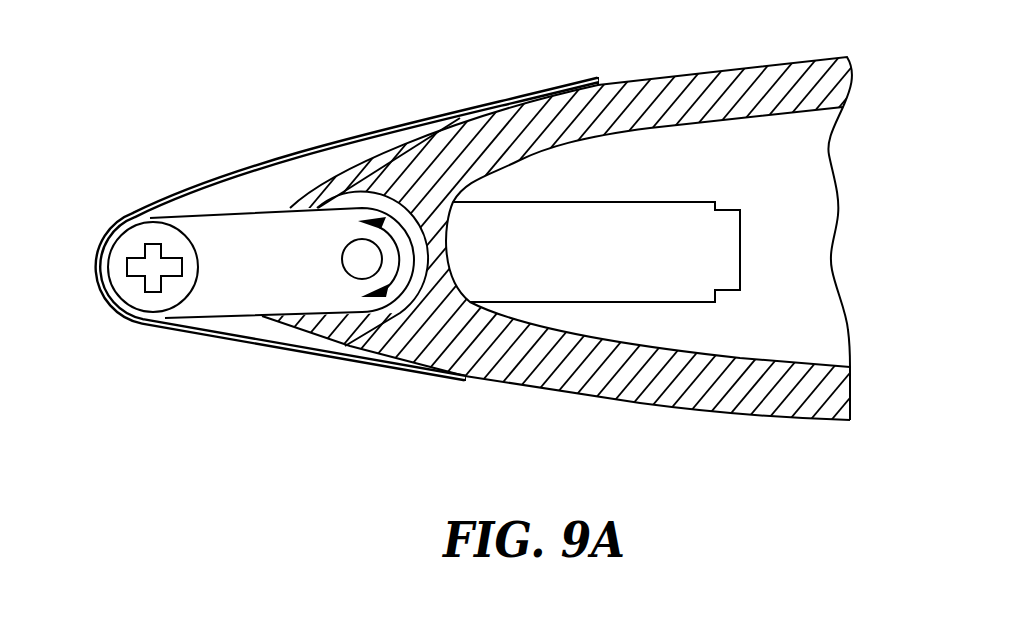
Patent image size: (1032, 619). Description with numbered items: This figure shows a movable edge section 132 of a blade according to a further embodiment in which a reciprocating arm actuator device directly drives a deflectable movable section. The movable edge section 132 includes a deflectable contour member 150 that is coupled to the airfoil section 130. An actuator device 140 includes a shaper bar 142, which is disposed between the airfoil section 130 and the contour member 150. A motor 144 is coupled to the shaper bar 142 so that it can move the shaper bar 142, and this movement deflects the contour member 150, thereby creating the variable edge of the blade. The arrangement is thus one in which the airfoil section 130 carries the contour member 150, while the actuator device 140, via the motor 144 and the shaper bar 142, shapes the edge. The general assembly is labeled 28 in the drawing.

The surgical instrument assembly 28 is at (203, 50).
The airfoil section 130 is at (700, 90).
The movable edge section 132 is at (126, 194).
The actuator device 140 is at (238, 318).
The shaper bar 142 is at (218, 293).
The motor 144 is at (410, 290).
The deflectable contour member 150 is at (287, 152).